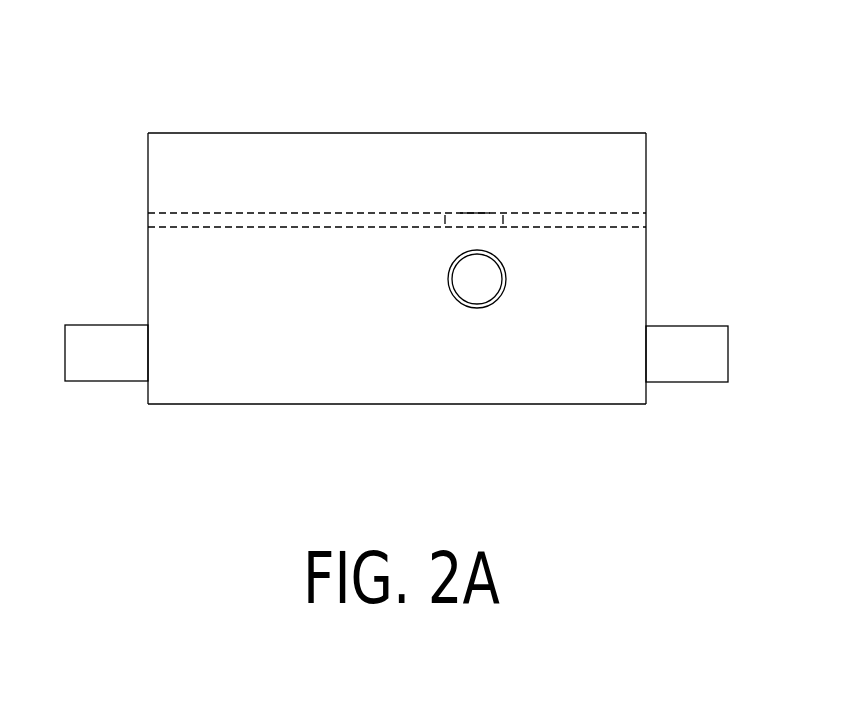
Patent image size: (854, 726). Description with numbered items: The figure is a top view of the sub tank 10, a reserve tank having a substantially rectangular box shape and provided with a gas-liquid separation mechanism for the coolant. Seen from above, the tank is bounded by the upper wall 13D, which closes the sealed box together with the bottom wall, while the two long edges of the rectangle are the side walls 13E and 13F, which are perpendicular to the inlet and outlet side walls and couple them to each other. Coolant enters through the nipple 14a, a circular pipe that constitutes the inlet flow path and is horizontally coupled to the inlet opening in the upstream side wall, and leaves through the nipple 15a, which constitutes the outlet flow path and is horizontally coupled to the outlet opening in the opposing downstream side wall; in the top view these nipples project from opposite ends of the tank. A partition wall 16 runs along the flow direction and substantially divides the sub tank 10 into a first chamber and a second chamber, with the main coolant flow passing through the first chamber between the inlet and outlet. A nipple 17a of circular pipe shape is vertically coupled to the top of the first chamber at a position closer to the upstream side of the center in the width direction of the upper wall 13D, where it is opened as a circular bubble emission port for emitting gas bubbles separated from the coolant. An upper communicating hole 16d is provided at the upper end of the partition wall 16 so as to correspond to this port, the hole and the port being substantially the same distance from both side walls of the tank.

The sub tank 10 is at (612, 88).
The side wall 13F is at (255, 132).
The upper wall 13D is at (243, 404).
The side wall 13E is at (475, 404).
The nipple 15a is at (102, 325).
The nipple 14a is at (709, 326).
The partition wall 16 is at (608, 215).
The upper communicating hole 16d is at (473, 213).
The nipple 17a is at (498, 266).